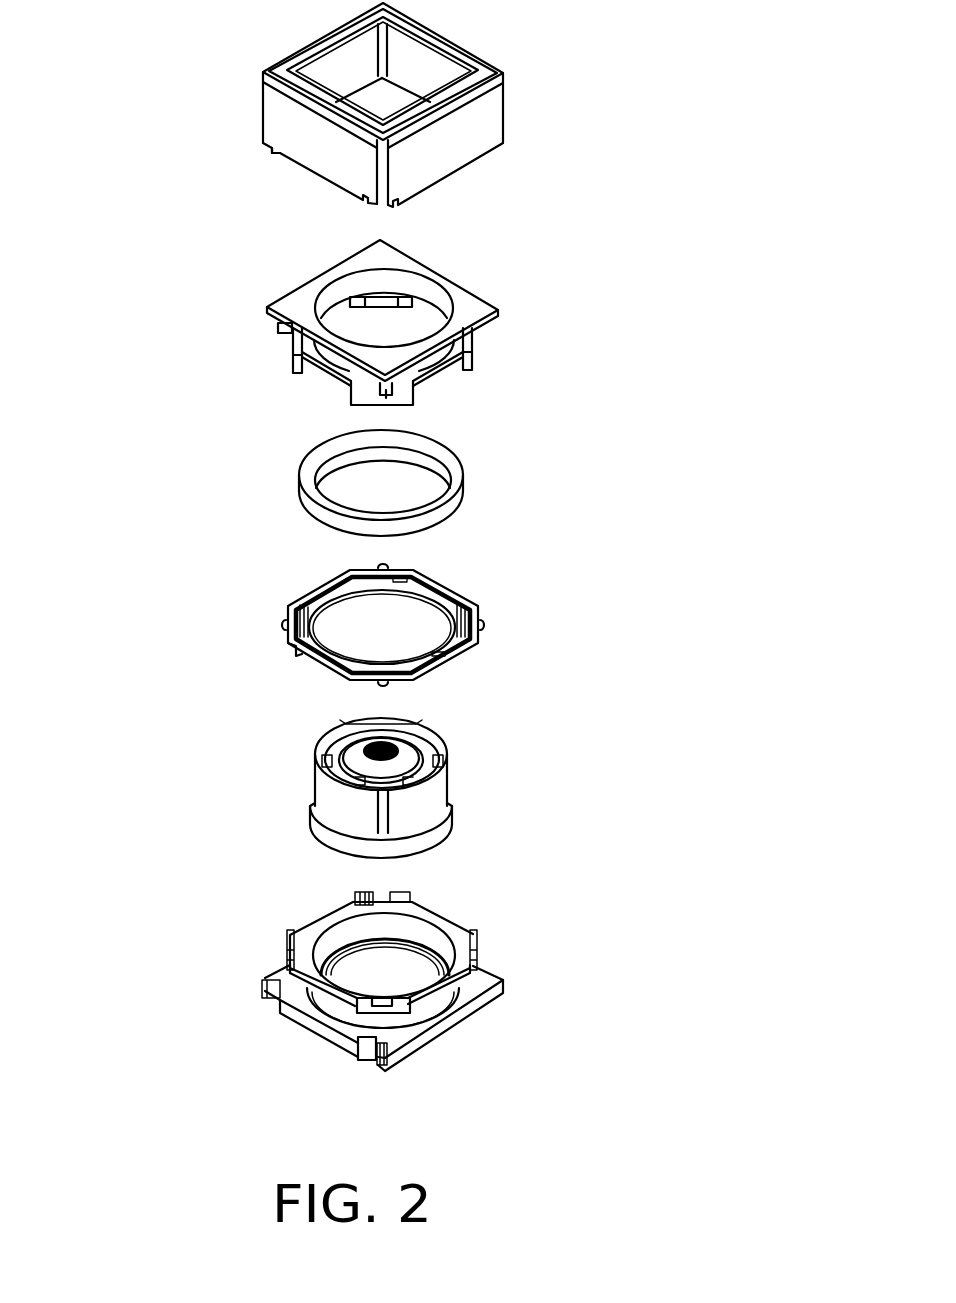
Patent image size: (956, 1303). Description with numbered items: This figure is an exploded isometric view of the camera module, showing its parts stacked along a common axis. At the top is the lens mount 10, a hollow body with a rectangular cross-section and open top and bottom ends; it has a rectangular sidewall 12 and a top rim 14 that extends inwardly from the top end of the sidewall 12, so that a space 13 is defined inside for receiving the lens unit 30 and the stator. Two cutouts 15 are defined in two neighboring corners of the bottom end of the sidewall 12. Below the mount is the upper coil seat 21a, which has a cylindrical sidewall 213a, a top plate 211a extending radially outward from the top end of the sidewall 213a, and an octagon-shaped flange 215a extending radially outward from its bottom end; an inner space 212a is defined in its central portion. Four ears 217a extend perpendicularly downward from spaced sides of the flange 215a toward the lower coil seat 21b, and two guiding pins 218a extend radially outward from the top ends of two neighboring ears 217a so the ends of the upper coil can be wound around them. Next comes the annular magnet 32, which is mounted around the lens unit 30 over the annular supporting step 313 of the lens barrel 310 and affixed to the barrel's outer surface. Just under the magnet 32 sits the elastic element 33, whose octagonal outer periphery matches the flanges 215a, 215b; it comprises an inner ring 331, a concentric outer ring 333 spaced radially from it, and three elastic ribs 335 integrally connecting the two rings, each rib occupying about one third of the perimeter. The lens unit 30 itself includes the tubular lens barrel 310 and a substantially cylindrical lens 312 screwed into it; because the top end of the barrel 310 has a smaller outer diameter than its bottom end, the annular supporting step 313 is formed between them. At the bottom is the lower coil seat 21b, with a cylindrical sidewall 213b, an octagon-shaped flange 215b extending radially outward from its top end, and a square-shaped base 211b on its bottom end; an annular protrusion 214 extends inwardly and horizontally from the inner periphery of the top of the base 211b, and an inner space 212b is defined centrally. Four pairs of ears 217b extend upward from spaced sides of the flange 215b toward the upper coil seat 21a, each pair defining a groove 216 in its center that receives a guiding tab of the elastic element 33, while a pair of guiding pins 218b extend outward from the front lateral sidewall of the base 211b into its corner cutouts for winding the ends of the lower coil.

The lens mount 10 is at (518, 116).
The sidewall 12 is at (430, 172).
The space 13 is at (395, 100).
The top rim 14 is at (480, 65).
The cutouts 15 is at (258, 152).
The upper coil seat 21a is at (314, 326).
The top plate 211a is at (328, 297).
The inner space 212a is at (405, 320).
The cylindrical sidewall 213a is at (288, 305).
The flange 215a is at (297, 338).
The ears 217a is at (295, 370).
The guiding pins 218a is at (390, 392).
The annular magnet 32 is at (308, 483).
The elastic element 33 is at (307, 611).
The inner ring 331 is at (284, 624).
The outer ring 333 is at (308, 631).
The elastic ribs 335 is at (302, 607).
The lens unit 30 is at (291, 763).
The lens barrel 310 is at (322, 783).
The lens 312 is at (353, 745).
The annular supporting step 313 is at (333, 833).
The lower coil seat 21b is at (406, 989).
The base 211b is at (490, 977).
The inner space 212b is at (355, 982).
The cylindrical sidewall 213b is at (412, 932).
The annular protrusion 214 is at (332, 949).
The flange 215b is at (460, 948).
The groove 216 is at (373, 897).
The ears 217b is at (400, 897).
The guiding pins 218b is at (378, 1068).